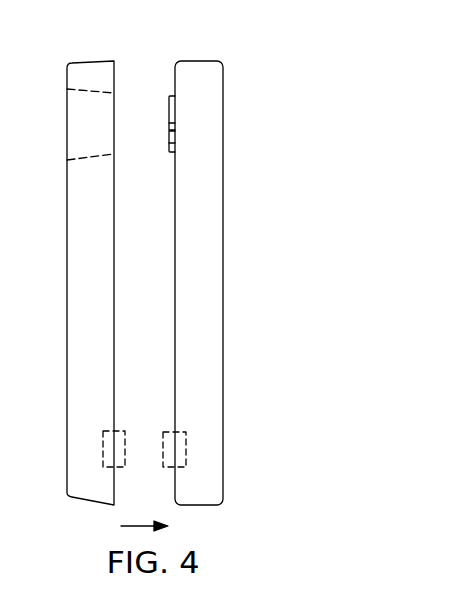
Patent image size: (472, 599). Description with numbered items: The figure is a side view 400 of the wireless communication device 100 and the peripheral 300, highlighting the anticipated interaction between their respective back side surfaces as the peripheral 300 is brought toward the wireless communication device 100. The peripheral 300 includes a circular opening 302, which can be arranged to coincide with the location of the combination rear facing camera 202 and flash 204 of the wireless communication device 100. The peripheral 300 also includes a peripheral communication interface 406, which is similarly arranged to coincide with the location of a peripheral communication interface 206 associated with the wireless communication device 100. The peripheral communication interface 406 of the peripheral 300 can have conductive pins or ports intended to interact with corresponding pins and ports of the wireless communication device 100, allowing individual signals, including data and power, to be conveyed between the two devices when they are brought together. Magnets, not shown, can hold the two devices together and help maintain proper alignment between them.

The wireless communication device 100 is at (212, 250).
The rear facing camera 202 is at (176, 123).
The flash 204 is at (176, 147).
The peripheral communication interface 206 is at (186, 448).
The peripheral 300 is at (67, 290).
The circular opening 302 is at (91, 128).
The side view 400 is at (257, 50).
The peripheral communication interface 406 is at (103, 452).